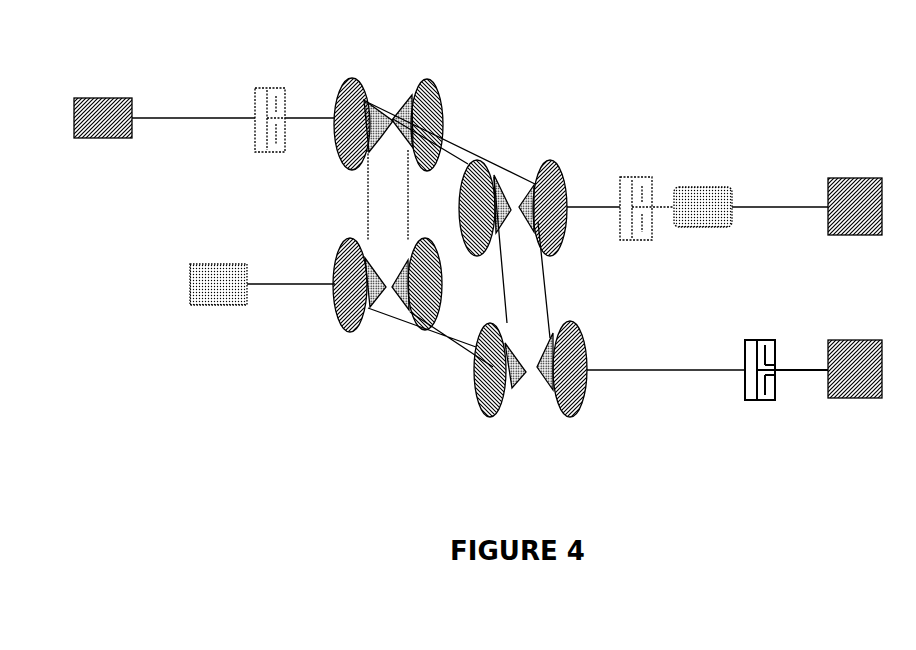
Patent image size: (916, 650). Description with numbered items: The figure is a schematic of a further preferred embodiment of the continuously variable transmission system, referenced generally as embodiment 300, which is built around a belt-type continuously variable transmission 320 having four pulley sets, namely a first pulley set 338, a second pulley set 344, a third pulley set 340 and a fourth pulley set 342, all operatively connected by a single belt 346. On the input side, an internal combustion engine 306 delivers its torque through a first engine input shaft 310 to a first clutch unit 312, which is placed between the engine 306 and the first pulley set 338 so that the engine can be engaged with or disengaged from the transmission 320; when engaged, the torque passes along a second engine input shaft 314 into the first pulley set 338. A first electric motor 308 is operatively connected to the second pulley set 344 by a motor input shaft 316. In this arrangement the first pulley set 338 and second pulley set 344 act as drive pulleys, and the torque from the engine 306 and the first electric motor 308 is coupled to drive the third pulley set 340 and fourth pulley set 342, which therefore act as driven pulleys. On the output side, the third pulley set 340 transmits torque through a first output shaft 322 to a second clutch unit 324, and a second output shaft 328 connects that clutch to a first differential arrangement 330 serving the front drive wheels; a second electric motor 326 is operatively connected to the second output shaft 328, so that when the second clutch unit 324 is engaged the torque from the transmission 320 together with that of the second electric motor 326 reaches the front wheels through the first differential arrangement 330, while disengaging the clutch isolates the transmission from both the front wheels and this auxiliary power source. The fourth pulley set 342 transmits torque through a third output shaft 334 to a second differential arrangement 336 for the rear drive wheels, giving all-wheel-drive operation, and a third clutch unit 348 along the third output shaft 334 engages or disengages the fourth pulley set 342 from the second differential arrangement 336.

The continuously variable transmission system embodiment 300 is at (658, 62).
The internal combustion engine 306 is at (100, 92).
The first electric motor 308 is at (182, 294).
The first engine input shaft 310 is at (175, 113).
The first clutch unit 312 is at (270, 85).
The second engine input shaft 314 is at (310, 128).
The motor input shaft 316 is at (297, 294).
The belt-type continuously variable transmission 320 is at (488, 122).
The first output shaft 322 is at (588, 218).
The second clutch unit 324 is at (627, 167).
The second electric motor 326 is at (699, 180).
The second output shaft 328 is at (763, 220).
The first differential arrangement 330 is at (846, 168).
The third output shaft 334 is at (711, 384).
The second differential arrangement 336 is at (853, 410).
The first pulley set 338 is at (399, 78).
The third pulley set 340 is at (551, 266).
The fourth pulley set 342 is at (516, 404).
The second pulley set 344 is at (345, 348).
The single belt 346 is at (419, 348).
The third clutch unit 348 is at (746, 408).